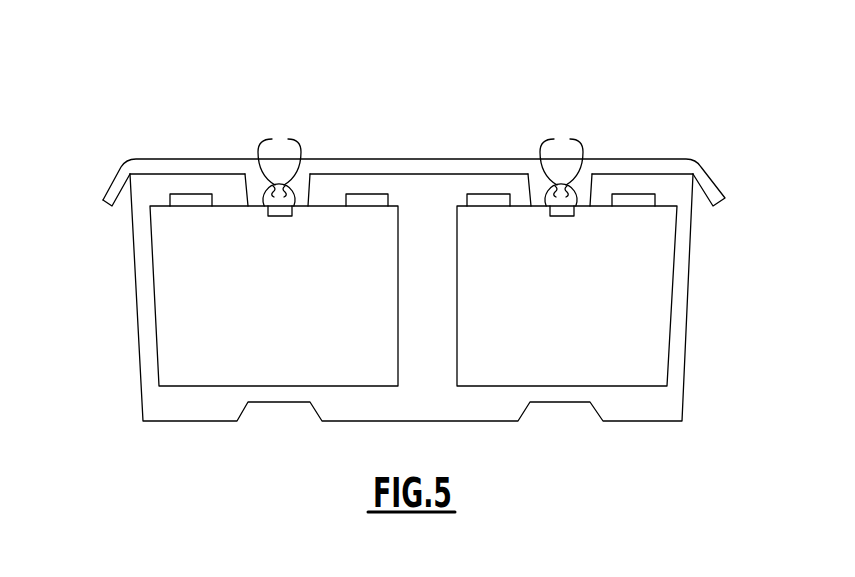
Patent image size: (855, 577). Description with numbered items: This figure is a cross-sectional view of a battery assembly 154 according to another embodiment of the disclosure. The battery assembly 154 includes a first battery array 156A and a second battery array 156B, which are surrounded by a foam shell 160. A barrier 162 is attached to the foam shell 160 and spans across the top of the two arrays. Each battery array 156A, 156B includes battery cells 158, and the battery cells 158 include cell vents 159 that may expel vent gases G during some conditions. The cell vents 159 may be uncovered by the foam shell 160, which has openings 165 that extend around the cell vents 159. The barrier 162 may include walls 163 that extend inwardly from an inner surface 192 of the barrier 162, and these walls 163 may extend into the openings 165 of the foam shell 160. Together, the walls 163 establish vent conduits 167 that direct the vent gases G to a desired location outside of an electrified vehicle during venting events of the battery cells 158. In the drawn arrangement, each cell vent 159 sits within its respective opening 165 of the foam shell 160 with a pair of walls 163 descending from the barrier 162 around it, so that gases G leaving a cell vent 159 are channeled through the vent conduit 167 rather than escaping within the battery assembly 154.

The battery assembly 154 is at (420, 90).
The first battery array 156A is at (308, 315).
The second battery array 156B is at (593, 315).
The battery cell 158 is at (148, 264).
The cell vent 159 is at (287, 207).
The foam shell 160 is at (683, 303).
The barrier 162 is at (674, 164).
The wall 163 is at (255, 178).
The opening 165 is at (310, 188).
The vent conduit 167 is at (277, 194).
The inner surface 192 is at (179, 178).
The vent gases G is at (420, 138).